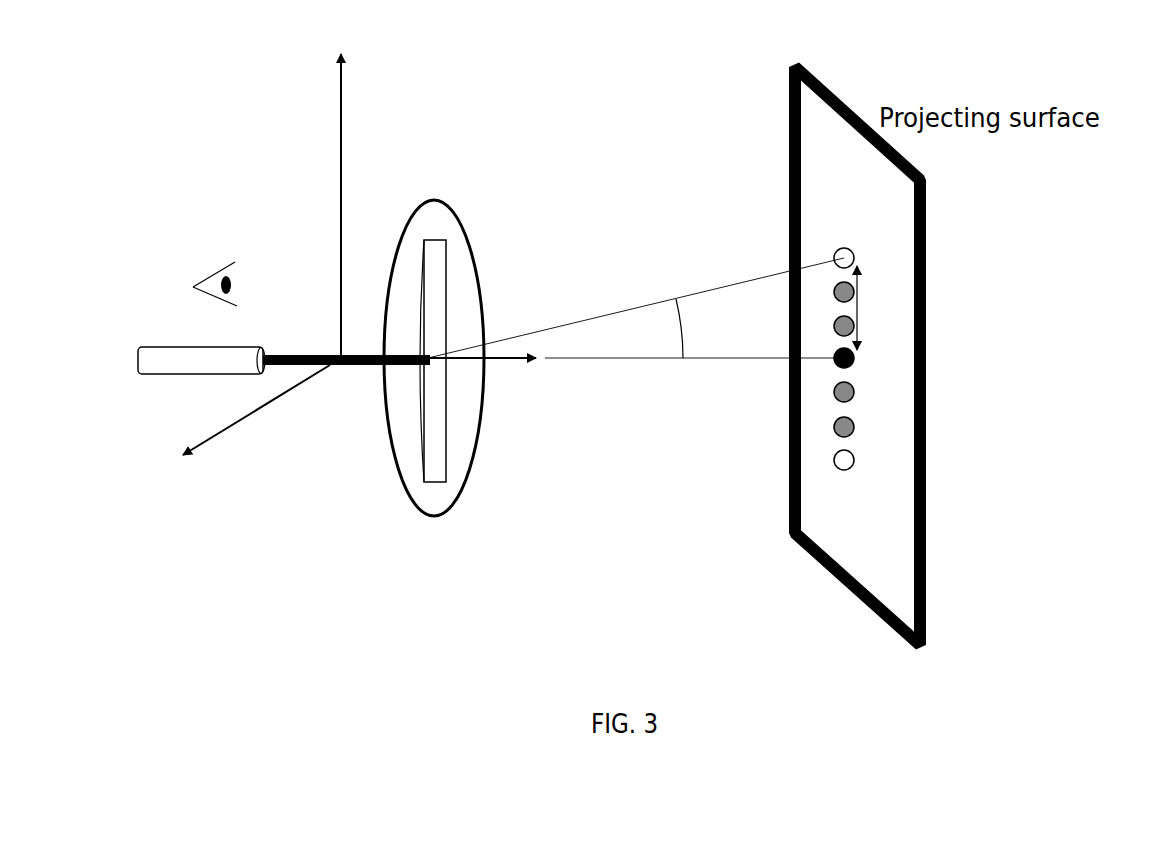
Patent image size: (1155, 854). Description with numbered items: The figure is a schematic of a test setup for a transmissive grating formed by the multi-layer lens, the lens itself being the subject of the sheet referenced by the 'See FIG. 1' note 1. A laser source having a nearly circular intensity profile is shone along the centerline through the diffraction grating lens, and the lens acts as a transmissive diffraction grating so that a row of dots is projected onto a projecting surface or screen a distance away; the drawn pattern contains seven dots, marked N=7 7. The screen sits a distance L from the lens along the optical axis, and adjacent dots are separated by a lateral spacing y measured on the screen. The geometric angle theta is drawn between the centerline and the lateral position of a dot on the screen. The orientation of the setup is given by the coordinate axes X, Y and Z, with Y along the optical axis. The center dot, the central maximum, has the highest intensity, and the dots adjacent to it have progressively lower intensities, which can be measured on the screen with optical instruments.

The lens assembly (see FIG. 1) 1 is at (463, 197).
The N=7 projected spot array 7 is at (870, 335).
The distance L to projecting surface L is at (694, 380).
The spot spacing y is at (870, 308).
The X axis X is at (237, 429).
The Y axis Y is at (446, 380).
The Z axis Z is at (341, 183).